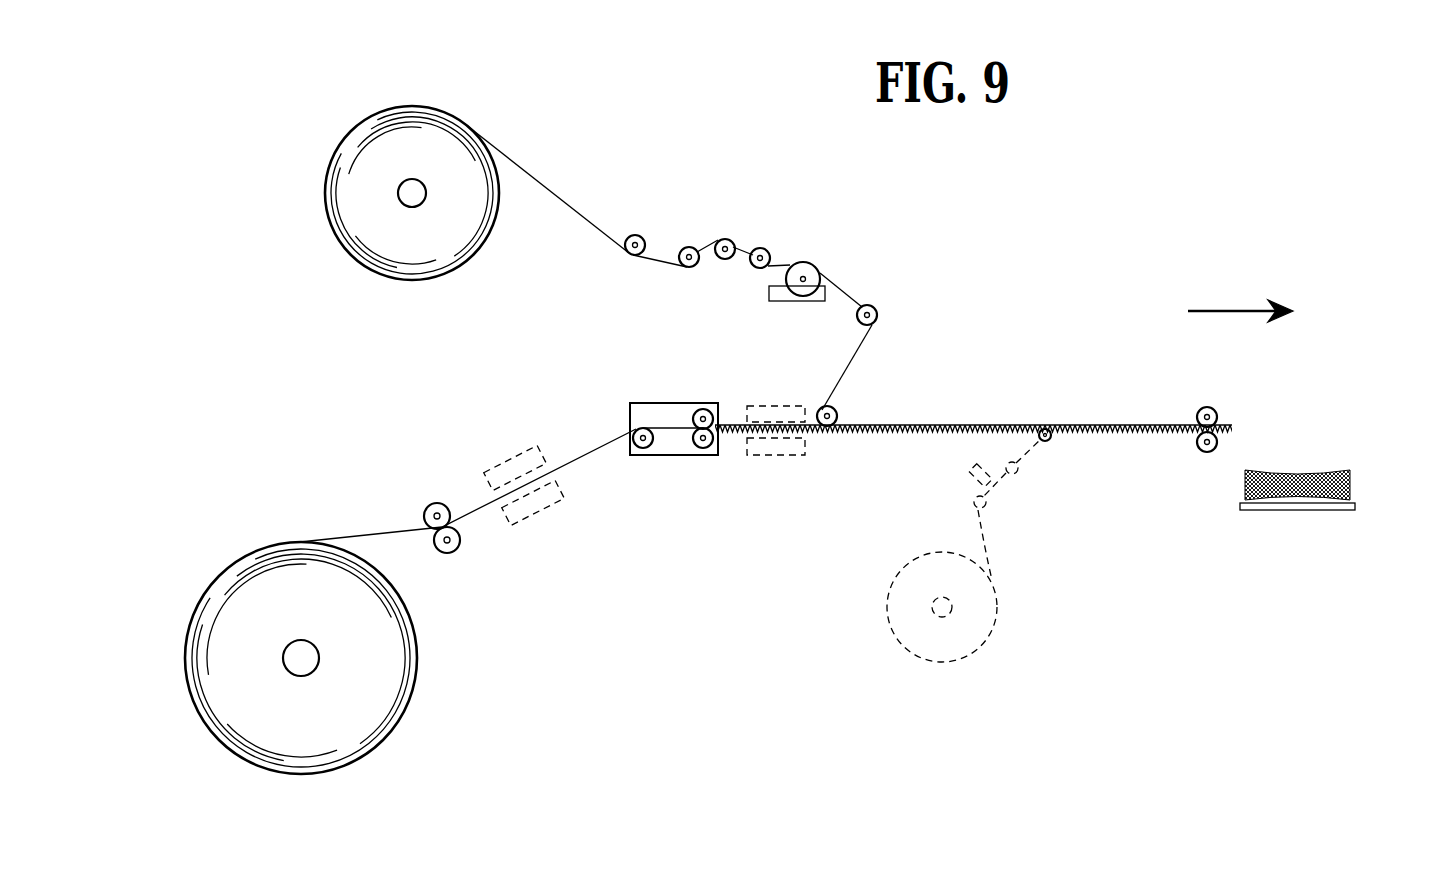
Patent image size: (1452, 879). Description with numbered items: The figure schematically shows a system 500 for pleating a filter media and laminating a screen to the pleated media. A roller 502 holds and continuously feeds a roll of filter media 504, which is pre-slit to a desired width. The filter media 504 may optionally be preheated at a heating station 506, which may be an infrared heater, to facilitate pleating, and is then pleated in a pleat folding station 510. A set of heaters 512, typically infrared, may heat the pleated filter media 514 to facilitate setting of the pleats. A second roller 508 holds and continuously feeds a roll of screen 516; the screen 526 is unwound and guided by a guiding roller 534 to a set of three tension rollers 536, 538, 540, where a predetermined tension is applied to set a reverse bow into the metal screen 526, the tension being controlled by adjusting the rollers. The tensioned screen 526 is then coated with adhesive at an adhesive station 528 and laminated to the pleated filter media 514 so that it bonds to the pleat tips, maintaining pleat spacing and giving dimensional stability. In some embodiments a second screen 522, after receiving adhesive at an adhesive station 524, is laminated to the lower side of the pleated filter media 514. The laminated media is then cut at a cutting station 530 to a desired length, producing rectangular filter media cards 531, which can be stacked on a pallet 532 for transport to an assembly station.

The system 500 is at (1320, 231).
The roller 502 is at (296, 662).
The roll of filter media 504 is at (372, 536).
The heating station 506 is at (512, 462).
The roller 508 is at (406, 198).
The pleat folding station 510 is at (690, 456).
The set of heaters 512 is at (775, 405).
The pleated filter media 514 is at (728, 425).
The roll of screen 516 is at (380, 126).
The second screen 522 is at (990, 490).
The adhesive station 524 is at (975, 478).
The screen 526 is at (558, 196).
The adhesive station 528 is at (802, 262).
The cutting station 530 is at (1205, 405).
The filter media cards 531 is at (1337, 478).
The pallet 532 is at (1304, 510).
The guiding roller 534 is at (630, 235).
The tension roller 536 is at (681, 247).
The tension roller 538 is at (721, 238).
The tension roller 540 is at (766, 247).